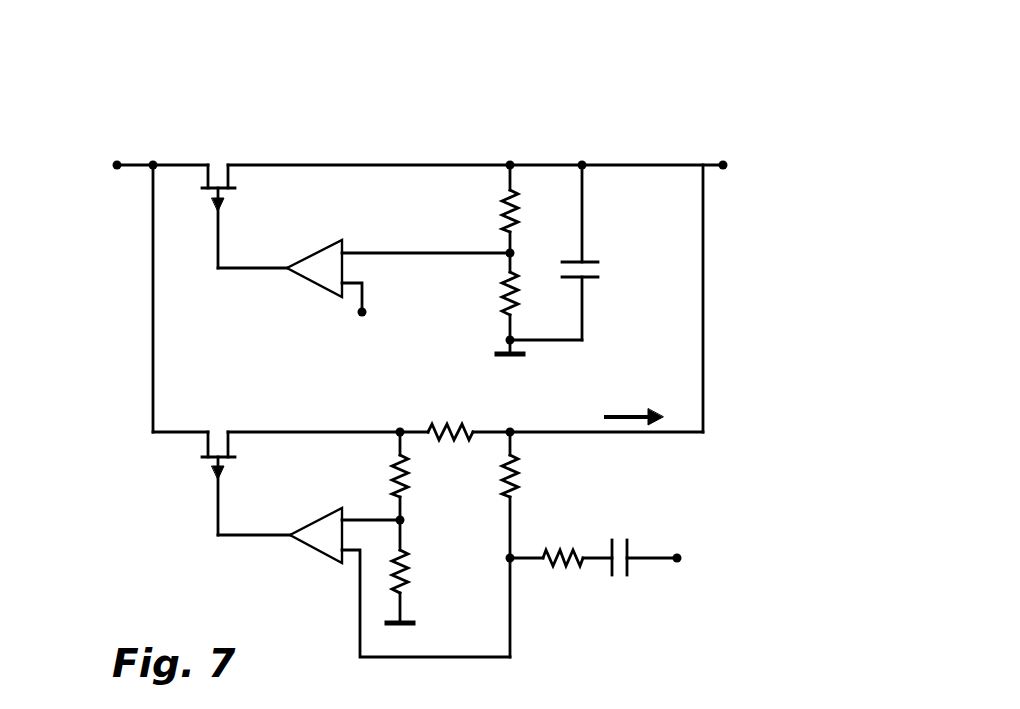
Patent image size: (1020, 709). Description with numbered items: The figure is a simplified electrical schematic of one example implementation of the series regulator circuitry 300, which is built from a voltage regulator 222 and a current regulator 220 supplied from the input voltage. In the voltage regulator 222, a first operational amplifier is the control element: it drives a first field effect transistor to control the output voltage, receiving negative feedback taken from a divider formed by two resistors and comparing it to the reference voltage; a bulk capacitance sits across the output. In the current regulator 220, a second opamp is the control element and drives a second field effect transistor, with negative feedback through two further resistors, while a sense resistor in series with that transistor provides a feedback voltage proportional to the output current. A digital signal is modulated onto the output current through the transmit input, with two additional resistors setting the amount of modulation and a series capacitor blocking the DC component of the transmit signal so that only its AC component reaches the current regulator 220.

The two-wire field device circuit 300 is at (750, 82).
The voltage regulator 222 is at (108, 266).
The current regulator 220 is at (150, 504).